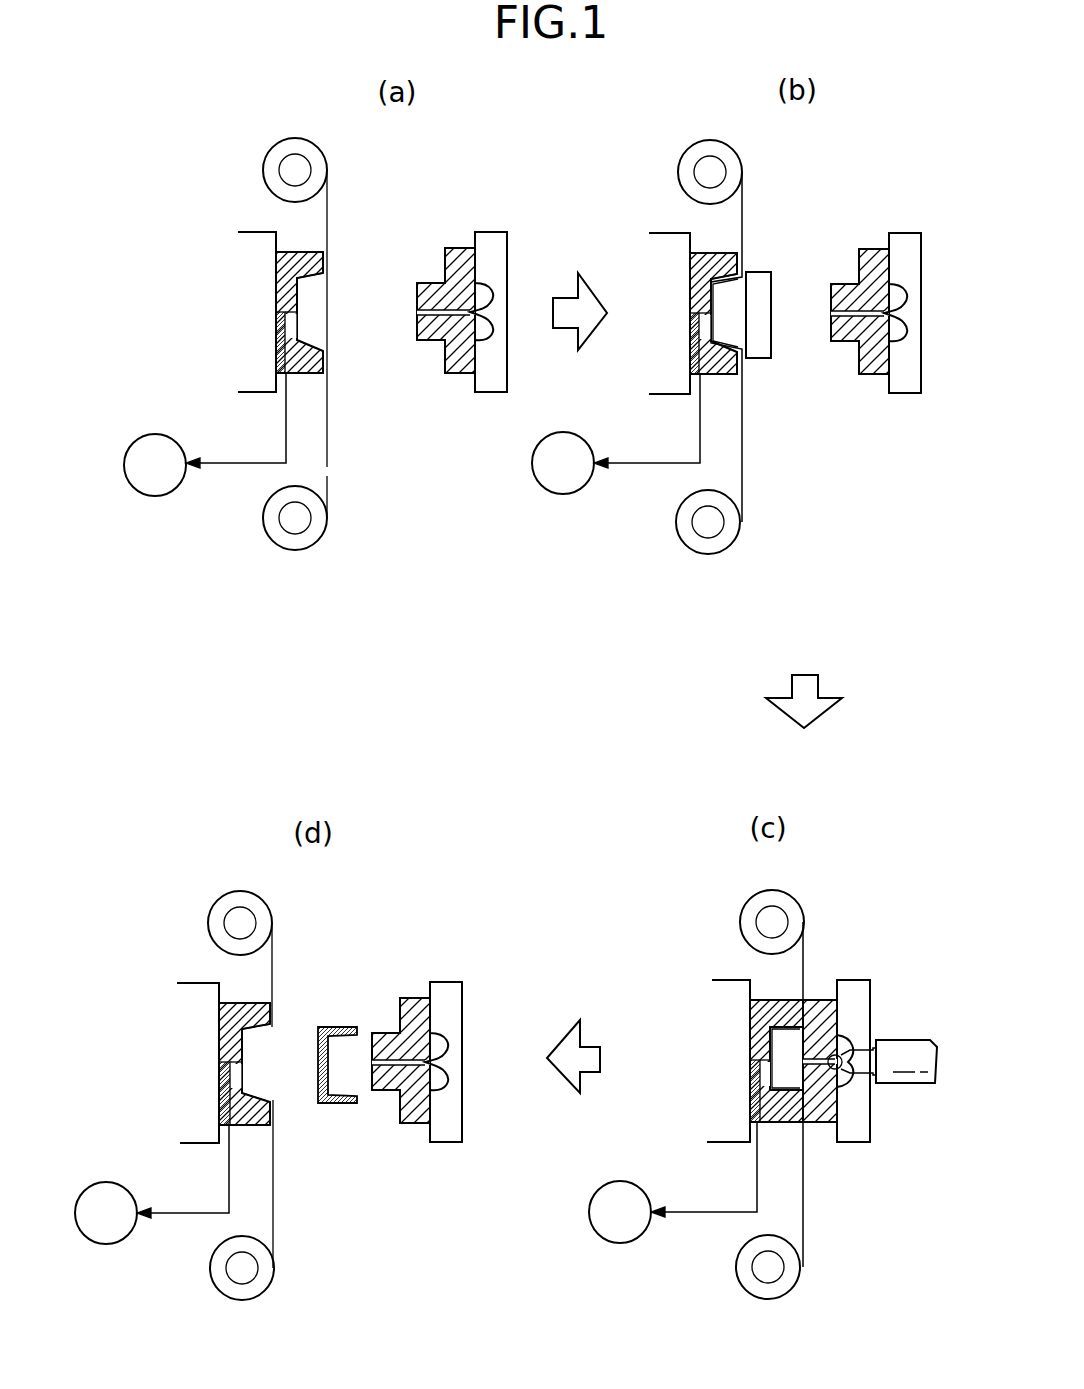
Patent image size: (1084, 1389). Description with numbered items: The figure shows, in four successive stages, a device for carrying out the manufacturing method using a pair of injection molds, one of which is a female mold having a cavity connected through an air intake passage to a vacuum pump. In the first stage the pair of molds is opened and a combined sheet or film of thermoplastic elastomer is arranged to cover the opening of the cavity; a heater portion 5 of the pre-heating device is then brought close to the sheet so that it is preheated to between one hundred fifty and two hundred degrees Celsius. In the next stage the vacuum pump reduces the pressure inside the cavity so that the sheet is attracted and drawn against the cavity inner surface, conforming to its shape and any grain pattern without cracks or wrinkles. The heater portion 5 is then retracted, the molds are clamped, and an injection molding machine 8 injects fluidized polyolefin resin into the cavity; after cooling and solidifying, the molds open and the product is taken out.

The heater portion 5 is at (771, 287).
The injection molding machine 8 is at (912, 1040).